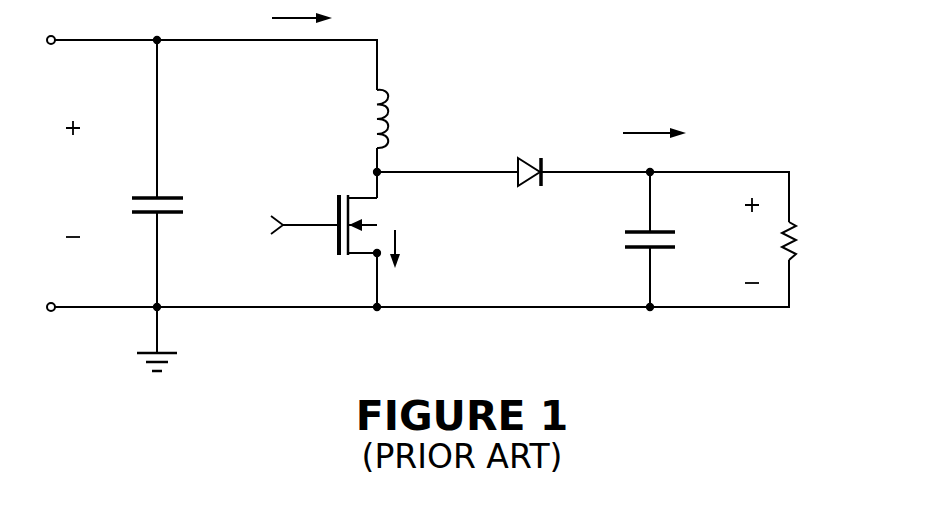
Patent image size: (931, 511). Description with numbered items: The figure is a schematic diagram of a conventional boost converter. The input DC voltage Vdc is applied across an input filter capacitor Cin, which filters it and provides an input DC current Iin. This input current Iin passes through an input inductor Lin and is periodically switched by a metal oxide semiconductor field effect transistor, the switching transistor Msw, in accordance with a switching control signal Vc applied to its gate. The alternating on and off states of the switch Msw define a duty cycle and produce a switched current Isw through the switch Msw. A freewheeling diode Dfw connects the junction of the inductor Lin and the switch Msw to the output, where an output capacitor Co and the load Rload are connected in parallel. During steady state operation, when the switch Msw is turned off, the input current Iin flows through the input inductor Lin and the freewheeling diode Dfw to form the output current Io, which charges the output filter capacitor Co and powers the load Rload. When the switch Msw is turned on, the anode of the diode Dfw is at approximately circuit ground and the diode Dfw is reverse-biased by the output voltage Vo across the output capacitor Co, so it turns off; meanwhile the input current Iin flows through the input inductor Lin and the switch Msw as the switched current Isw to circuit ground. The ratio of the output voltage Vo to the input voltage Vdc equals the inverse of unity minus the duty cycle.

The input DC voltage Vdc is at (66, 179).
The input filter capacitor Cin is at (169, 224).
The input DC current Iin is at (284, 17).
The input inductor Lin is at (363, 119).
The switching transistor (MOSFET) Msw is at (330, 243).
The switching control signal Vc is at (259, 224).
The switched current Isw is at (419, 239).
The freewheeling diode Dfw is at (535, 154).
The output current Io is at (639, 136).
The output capacitor Co is at (658, 255).
The output voltage Vo is at (747, 240).
The load Rload is at (826, 241).